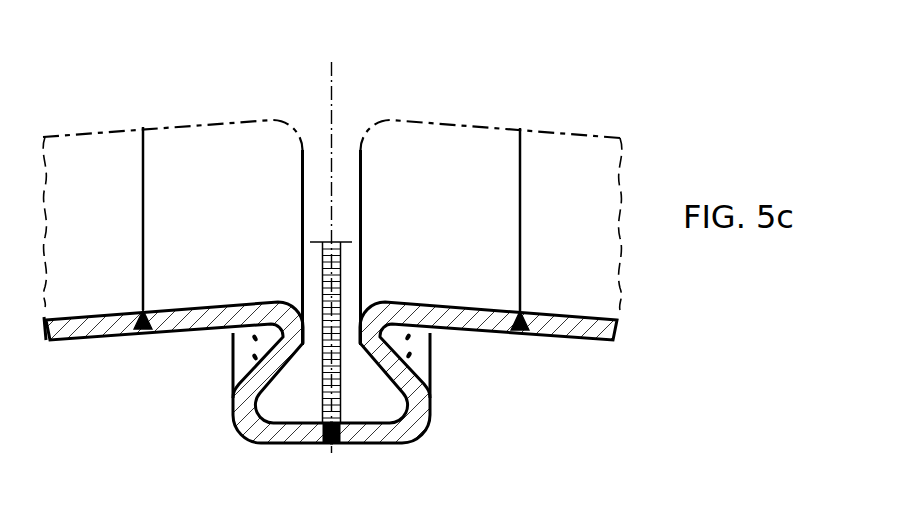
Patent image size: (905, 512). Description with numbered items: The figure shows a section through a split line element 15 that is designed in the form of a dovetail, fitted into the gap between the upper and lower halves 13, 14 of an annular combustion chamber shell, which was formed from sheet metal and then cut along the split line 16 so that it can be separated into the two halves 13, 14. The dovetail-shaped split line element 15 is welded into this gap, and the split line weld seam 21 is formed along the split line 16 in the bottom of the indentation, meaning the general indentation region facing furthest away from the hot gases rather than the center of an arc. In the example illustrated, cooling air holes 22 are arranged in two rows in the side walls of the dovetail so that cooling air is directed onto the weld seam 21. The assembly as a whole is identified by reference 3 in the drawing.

The connection / joint assembly 3 is at (513, 52).
The upper half 13 is at (97, 177).
The lower half 14 is at (566, 177).
The split line element 15 is at (183, 177).
The split line 16 is at (333, 236).
The split line weld seam 21 is at (328, 277).
The cooling air holes 22 is at (411, 352).